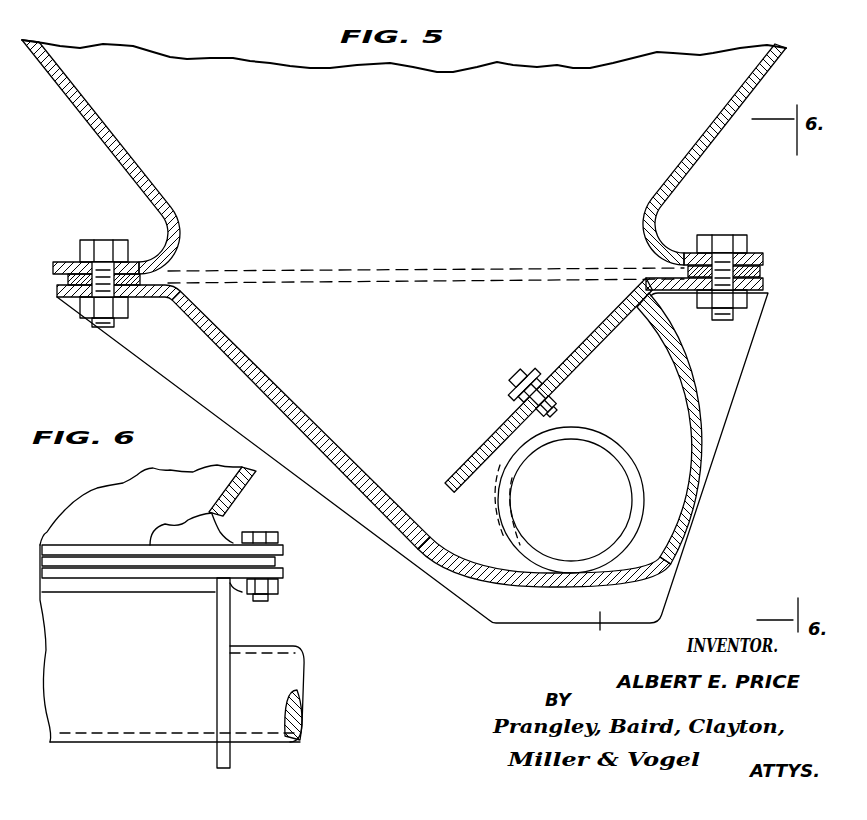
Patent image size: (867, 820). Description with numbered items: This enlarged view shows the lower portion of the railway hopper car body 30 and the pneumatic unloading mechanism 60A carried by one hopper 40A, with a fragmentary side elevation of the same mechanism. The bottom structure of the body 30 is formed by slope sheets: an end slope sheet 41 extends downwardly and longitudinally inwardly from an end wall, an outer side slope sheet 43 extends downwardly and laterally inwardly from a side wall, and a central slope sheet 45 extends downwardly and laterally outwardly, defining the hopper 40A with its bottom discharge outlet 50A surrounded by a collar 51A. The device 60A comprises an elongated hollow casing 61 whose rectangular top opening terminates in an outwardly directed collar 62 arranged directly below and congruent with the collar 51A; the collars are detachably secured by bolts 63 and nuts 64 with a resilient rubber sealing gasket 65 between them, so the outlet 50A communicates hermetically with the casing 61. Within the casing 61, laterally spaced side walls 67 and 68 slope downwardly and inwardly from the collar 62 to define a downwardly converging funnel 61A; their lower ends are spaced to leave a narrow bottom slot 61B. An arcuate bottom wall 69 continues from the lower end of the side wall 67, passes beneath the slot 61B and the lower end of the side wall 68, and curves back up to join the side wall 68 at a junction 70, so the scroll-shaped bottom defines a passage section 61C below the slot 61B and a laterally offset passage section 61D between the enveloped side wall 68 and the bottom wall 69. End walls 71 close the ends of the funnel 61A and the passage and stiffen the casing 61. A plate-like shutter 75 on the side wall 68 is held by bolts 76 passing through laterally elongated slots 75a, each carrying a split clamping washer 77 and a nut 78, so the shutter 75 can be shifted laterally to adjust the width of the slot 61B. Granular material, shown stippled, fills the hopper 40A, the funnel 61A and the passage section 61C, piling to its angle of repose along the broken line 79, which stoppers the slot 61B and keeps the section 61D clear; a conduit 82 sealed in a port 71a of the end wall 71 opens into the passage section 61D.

In FIG. 5, the body 30 is at (88, 41).
In FIG. 6, the body 30 is at (172, 466).
In FIG. 5, the hopper 40A is at (414, 145).
In FIG. 6, the hopper 40A is at (119, 520).
In FIG. 5, the end slope sheet 41 is at (537, 67).
In FIG. 6, the end slope sheet 41 is at (242, 494).
In FIG. 5, the outer side slope sheet 43 is at (118, 136).
In FIG. 6, the outer side slope sheet 43 is at (72, 514).
In FIG. 5, the central slope sheet 45 is at (710, 127).
In FIG. 6, the central slope sheet 45 is at (180, 535).
In FIG. 5, the bottom discharge outlet 50A is at (178, 258).
In FIG. 5, the collar 51A is at (58, 262).
In FIG. 6, the collar 51A is at (285, 548).
In FIG. 5, the pneumatic unloading mechanism 60A is at (705, 531).
In FIG. 6, the pneumatic unloading mechanism 60A is at (128, 752).
In FIG. 5, the casing 61 is at (226, 368).
In FIG. 6, the casing 61 is at (171, 667).
In FIG. 5, the funnel 61A is at (429, 343).
In FIG. 5, the bottom slot 61B is at (423, 496).
In FIG. 5, the passage section 61C is at (458, 526).
In FIG. 5, the passage section 61D is at (640, 385).
In FIG. 5, the collar 62 is at (57, 292).
In FIG. 6, the collar 62 is at (287, 575).
In FIG. 5, the bolts 63 is at (100, 241).
In FIG. 6, the bolts 63 is at (262, 532).
In FIG. 5, the nuts 64 is at (86, 308).
In FIG. 5, the sealing gasket 65 is at (66, 280).
In FIG. 6, the sealing gasket 65 is at (268, 562).
In FIG. 5, the side wall 67 is at (283, 390).
In FIG. 6, the side wall 67 is at (80, 697).
In FIG. 5, the side wall 68 is at (607, 340).
In FIG. 5, the bottom wall 69 is at (522, 584).
In FIG. 5, the junction 70 is at (634, 322).
In FIG. 5, the end walls 71 is at (612, 633).
In FIG. 6, the end walls 71 is at (222, 623).
In FIG. 5, the port 71a is at (627, 463).
In FIG. 5, the shutter 75 is at (495, 436).
In FIG. 5, the slots 75a is at (537, 378).
In FIG. 5, the bolts 76 is at (556, 406).
In FIG. 5, the split clamping washer 77 is at (517, 395).
In FIG. 5, the nut 78 is at (521, 368).
In FIG. 5, the broken line 79 is at (522, 515).
In FIG. 5, the conduit 82 is at (612, 446).